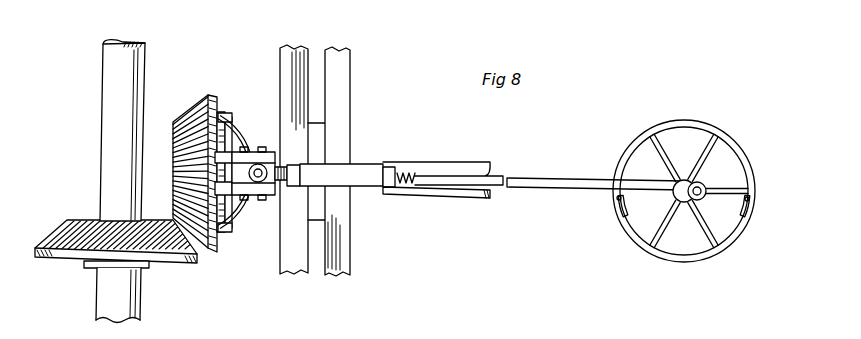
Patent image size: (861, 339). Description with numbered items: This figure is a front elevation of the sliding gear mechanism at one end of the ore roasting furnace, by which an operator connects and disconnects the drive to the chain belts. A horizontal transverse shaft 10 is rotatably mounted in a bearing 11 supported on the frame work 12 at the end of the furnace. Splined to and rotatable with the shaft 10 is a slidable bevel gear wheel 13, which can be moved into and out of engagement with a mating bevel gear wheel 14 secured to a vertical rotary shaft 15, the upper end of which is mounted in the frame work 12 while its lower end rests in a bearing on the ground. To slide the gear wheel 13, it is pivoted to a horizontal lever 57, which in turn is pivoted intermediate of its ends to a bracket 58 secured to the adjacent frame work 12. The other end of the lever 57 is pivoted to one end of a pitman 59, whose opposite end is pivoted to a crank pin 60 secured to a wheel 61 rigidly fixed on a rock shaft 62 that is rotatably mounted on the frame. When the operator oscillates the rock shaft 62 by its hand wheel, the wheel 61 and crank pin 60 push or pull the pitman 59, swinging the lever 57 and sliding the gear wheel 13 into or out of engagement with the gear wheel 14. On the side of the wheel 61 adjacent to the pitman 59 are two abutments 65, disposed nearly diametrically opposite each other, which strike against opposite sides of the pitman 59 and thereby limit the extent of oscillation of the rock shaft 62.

The horizontal transverse shaft 10 is at (428, 164).
The bearing 11 is at (312, 140).
The frame work 12 is at (347, 74).
The bevel gear wheel 13 is at (208, 92).
The bevel gear wheel 14 is at (78, 219).
The vertical rotary shaft 15 is at (115, 82).
The horizontal lever 57 is at (246, 137).
The bracket 58 is at (273, 163).
The pitman 59 is at (547, 180).
The crank pin 60 is at (701, 186).
The wheel 61 is at (680, 177).
The rock shaft 62 is at (685, 170).
The abutment 65 is at (751, 201).